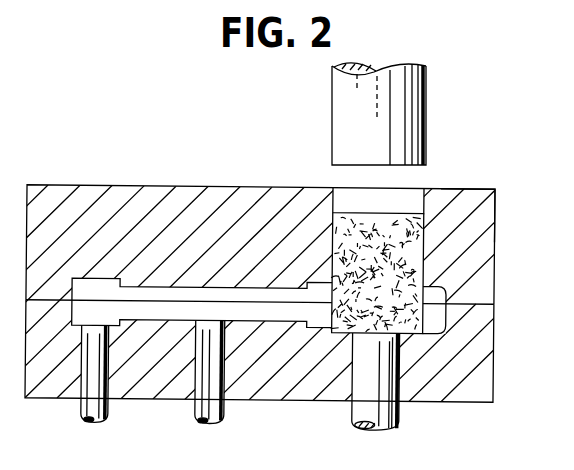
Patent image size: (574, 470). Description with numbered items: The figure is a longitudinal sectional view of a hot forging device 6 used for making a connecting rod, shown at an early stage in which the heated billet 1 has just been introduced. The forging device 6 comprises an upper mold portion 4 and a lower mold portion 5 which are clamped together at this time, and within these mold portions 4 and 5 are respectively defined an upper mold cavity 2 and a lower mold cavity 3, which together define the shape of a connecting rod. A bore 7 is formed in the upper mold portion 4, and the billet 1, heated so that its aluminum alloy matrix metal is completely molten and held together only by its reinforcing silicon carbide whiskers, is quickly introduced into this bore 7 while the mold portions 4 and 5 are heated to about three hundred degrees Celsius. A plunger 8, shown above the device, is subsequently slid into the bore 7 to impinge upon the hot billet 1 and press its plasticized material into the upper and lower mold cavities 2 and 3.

The billet 1 is at (395, 212).
The upper mold cavity 2 is at (210, 289).
The lower mold cavity 3 is at (259, 323).
The upper mold portion 4 is at (472, 189).
The lower mold portion 5 is at (464, 402).
The hot forging device 6 is at (163, 186).
The bore 7 is at (330, 202).
The plunger 8 is at (426, 92).